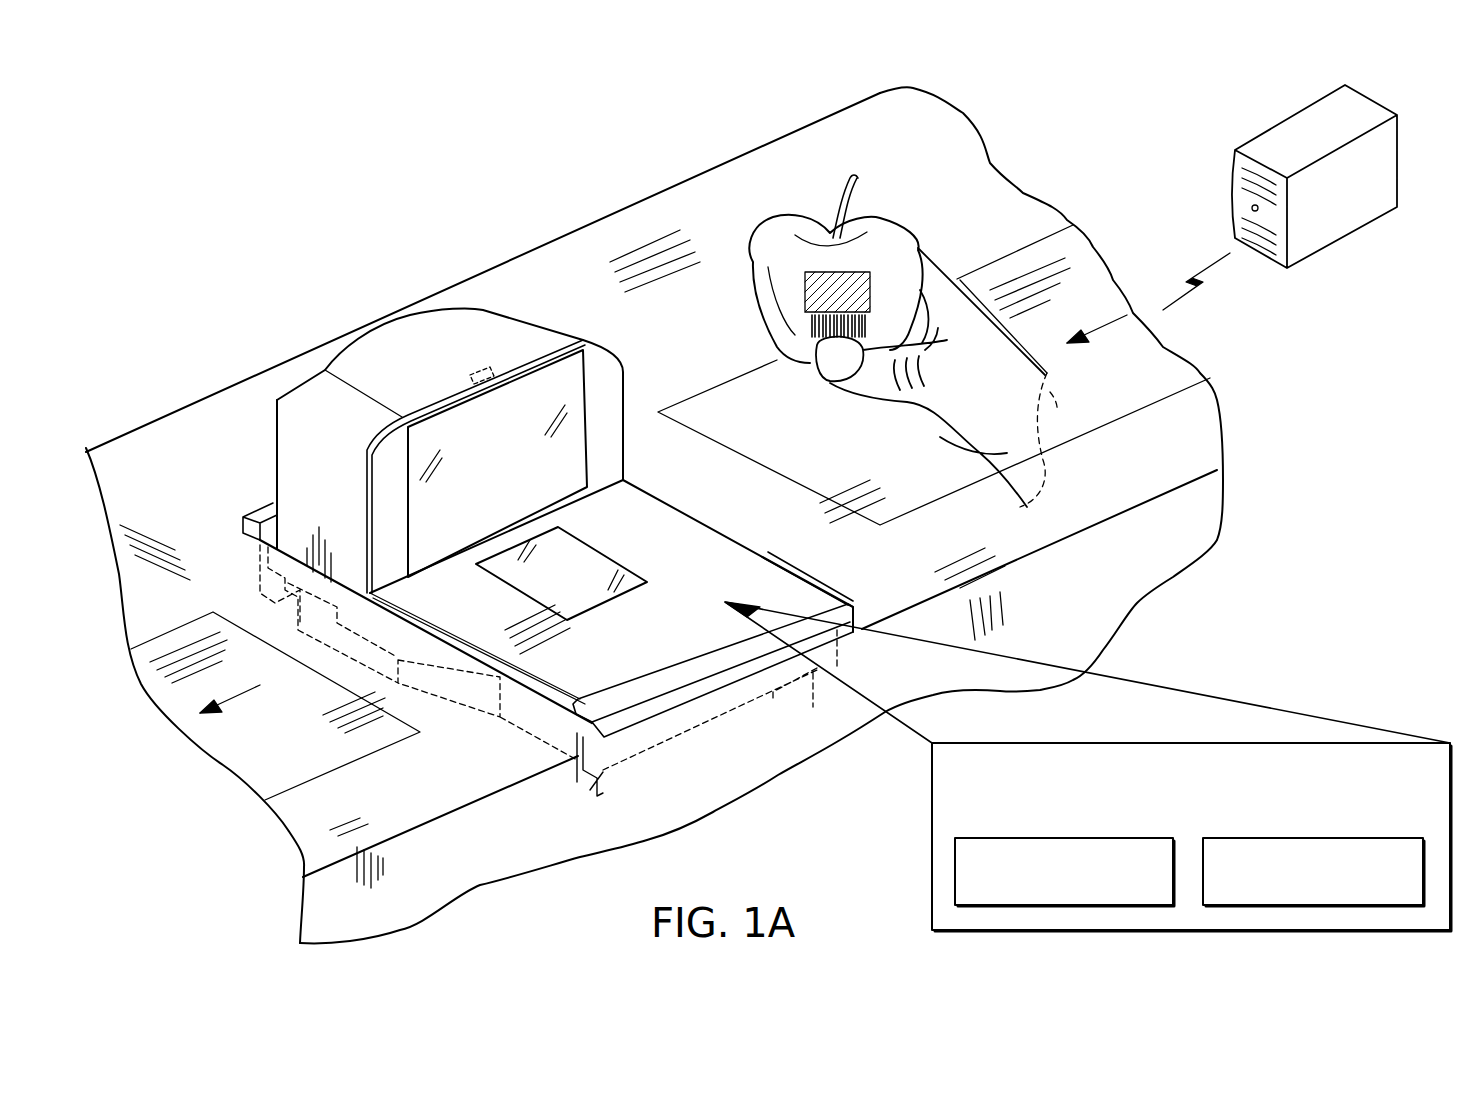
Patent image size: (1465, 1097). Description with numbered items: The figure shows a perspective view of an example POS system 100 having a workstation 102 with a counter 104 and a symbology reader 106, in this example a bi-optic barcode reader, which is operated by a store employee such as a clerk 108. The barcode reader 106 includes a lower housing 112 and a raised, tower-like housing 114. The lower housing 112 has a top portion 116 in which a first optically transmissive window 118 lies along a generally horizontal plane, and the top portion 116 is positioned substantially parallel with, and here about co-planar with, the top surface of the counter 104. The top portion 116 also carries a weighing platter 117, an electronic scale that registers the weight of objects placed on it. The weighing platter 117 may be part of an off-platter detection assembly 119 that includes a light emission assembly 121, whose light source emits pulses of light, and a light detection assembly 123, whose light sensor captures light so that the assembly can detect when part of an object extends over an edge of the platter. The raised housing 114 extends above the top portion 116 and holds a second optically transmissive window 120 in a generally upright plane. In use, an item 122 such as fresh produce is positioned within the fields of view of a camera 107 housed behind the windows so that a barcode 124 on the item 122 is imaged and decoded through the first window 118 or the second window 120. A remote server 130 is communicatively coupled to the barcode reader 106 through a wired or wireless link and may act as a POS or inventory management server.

The POS system 100 is at (768, 514).
The workstation 102 is at (178, 355).
The counter 104 is at (958, 165).
The symbology reader 106 is at (288, 478).
The camera 107 is at (483, 372).
The clerk 108 is at (1040, 383).
The lower housing 112 is at (565, 790).
The raised housing 114 is at (375, 335).
The top portion 116 is at (557, 678).
The weighing platter 117 is at (775, 588).
The first optically transmissive window 118 is at (602, 585).
The off-platter detection assembly 119 is at (1088, 766).
The second optically transmissive window 120 is at (445, 450).
The light emission assembly 121 is at (1065, 838).
The item 122 is at (888, 250).
The light detection assembly 123 is at (1313, 838).
The barcode 124 is at (803, 370).
The remote server 130 is at (1235, 195).